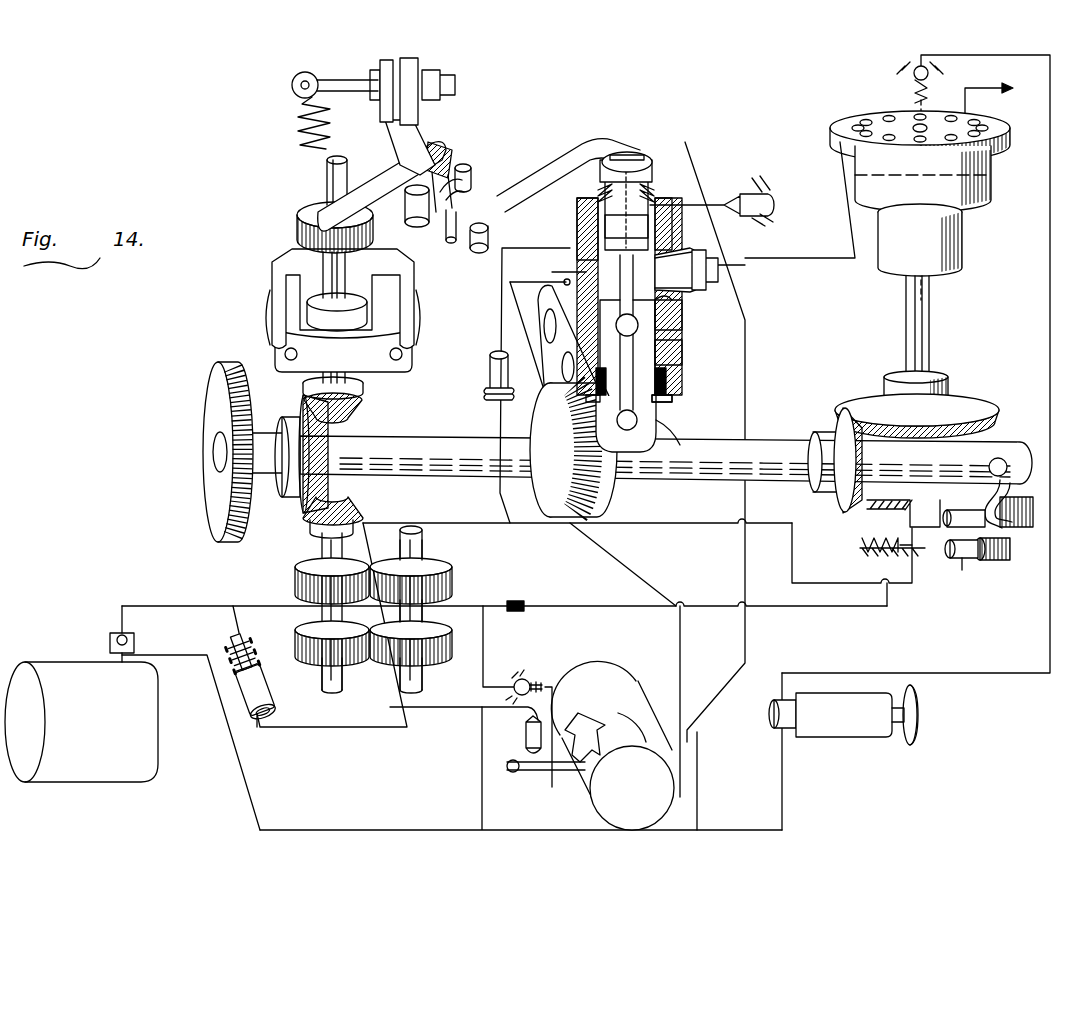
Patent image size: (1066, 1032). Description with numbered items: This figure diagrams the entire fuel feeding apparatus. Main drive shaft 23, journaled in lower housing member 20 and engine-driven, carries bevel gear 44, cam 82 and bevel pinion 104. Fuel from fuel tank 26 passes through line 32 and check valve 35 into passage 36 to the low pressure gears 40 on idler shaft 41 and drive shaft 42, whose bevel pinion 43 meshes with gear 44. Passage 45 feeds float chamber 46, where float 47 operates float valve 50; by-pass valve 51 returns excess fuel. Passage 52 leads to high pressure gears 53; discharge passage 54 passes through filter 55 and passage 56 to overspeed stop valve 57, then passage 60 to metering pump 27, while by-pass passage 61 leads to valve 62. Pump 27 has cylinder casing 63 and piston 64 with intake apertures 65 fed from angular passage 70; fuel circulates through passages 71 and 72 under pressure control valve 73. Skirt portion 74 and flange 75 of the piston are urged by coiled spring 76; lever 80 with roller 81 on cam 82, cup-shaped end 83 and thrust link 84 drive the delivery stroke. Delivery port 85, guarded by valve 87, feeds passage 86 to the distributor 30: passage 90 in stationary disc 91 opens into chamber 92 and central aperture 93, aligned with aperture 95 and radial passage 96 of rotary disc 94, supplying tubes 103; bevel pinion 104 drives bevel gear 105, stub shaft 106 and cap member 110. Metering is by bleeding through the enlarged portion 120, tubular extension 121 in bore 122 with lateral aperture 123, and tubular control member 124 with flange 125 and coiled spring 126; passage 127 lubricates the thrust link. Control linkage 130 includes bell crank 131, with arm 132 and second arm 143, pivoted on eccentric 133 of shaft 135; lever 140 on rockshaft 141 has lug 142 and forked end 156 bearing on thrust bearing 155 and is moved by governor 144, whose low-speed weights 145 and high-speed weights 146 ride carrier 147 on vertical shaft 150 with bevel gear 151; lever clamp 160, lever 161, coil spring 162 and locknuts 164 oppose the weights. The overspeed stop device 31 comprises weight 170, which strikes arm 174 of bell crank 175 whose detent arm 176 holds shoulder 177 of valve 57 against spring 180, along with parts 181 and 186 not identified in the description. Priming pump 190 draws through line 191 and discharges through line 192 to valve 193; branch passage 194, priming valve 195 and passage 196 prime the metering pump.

The lower housing member 20 is at (210, 388).
The main drive shaft 23 is at (428, 446).
The fuel tank 26 is at (48, 668).
The metering pump 27 is at (676, 340).
The distributor 30 is at (978, 202).
The overspeed stop device 31 is at (957, 582).
The line 32 is at (120, 660).
The check valve 35 is at (118, 632).
The passage 36 is at (142, 606).
The gears 40 is at (372, 660).
The idler shaft 41 is at (422, 680).
The drive shaft 42 is at (322, 686).
The bevel pinion 43 is at (308, 512).
The bevel gear 44 is at (334, 480).
The passage 45 is at (460, 708).
The float chamber 46 is at (482, 774).
The float 47 is at (612, 700).
The float valve 50 is at (526, 736).
The by-pass valve 51 is at (264, 690).
The passage 52 is at (684, 660).
The gears 53 is at (400, 556).
The passage 54 is at (466, 606).
The filter 55 is at (526, 603).
The passage 56 is at (814, 613).
The overspeed stop valve 57 is at (870, 558).
The passage 60 is at (806, 523).
The by-pass passage 61 is at (483, 645).
The pressure-operated valve 62 is at (530, 680).
The cylinder casing 63 is at (672, 350).
The piston 64 is at (672, 315).
The apertures 65 is at (566, 272).
The angularly shaped passage 70 is at (525, 282).
The passage 71 is at (500, 308).
The passage 72 is at (502, 503).
The pressure control valve 73 is at (489, 368).
The skirt portion 74 is at (668, 374).
The flange 75 is at (672, 400).
The coiled spring 76 is at (668, 382).
The lever 80 is at (548, 345).
The roller 81 is at (560, 392).
The cam 82 is at (600, 492).
The cup-shaped end 83 is at (635, 432).
The thrust link 84 is at (679, 426).
The delivery port 85 is at (660, 305).
The passage 86 is at (806, 258).
The pressure-operated valve 87 is at (710, 276).
The passage 90 is at (870, 130).
The stationary disc 91 is at (996, 148).
The chamber 92 is at (928, 126).
The central aperture 93 is at (992, 178).
The rotatably driven disc member 94 is at (990, 188).
The central aperture 95 is at (960, 176).
The radial passage 96 is at (950, 200).
The tube 103 is at (965, 103).
The bevel pinion 104 is at (832, 428).
The bevel gear 105 is at (866, 400).
The stub shaft 106 is at (930, 309).
The cap member 110 is at (958, 250).
The enlarged portion 120 is at (672, 256).
The tubular extension 121 is at (648, 212).
The bore 122 is at (600, 228).
The lateral aperture 123 is at (668, 240).
The tubular control member 124 is at (640, 178).
The flange 125 is at (640, 160).
The coiled spring 126 is at (606, 162).
The central passage 127 is at (621, 332).
The control linkage 130 is at (448, 160).
The bell crank 131 is at (472, 186).
The arm 132 is at (548, 172).
The eccentric 133 is at (492, 238).
The shaft 135 is at (462, 180).
The lever 140 is at (382, 162).
The rockshaft 141 is at (438, 140).
The lug 142 is at (424, 226).
The second arm 143 is at (452, 246).
The governor 144 is at (270, 240).
The low-speed weights 145 is at (300, 274).
The high-speed weights 146 is at (270, 298).
The carrier 147 is at (375, 364).
The vertical shaft 150 is at (322, 378).
The bevel gear 151 is at (352, 410).
The thrust bearing 155 is at (310, 212).
The forked end 156 is at (325, 178).
The lever clamp 160 is at (420, 66).
The lever 161 is at (332, 80).
The coil spring 162 is at (300, 133).
The locknuts 164 is at (372, 72).
The weight 170 is at (1003, 460).
The arm 174 is at (990, 495).
The bell crank 175 is at (1000, 560).
The arm 176 is at (960, 510).
The shoulder 177 is at (928, 510).
The spring 180 is at (860, 540).
The roller 181 is at (1016, 516).
The pin 186 is at (968, 568).
The priming pump 190 is at (856, 720).
The line 191 is at (782, 800).
The discharge line 192 is at (986, 673).
The pressure-operated valve 193 is at (928, 72).
The branch passage 194 is at (740, 242).
The priming valve 195 is at (744, 190).
The passage 196 is at (690, 228).